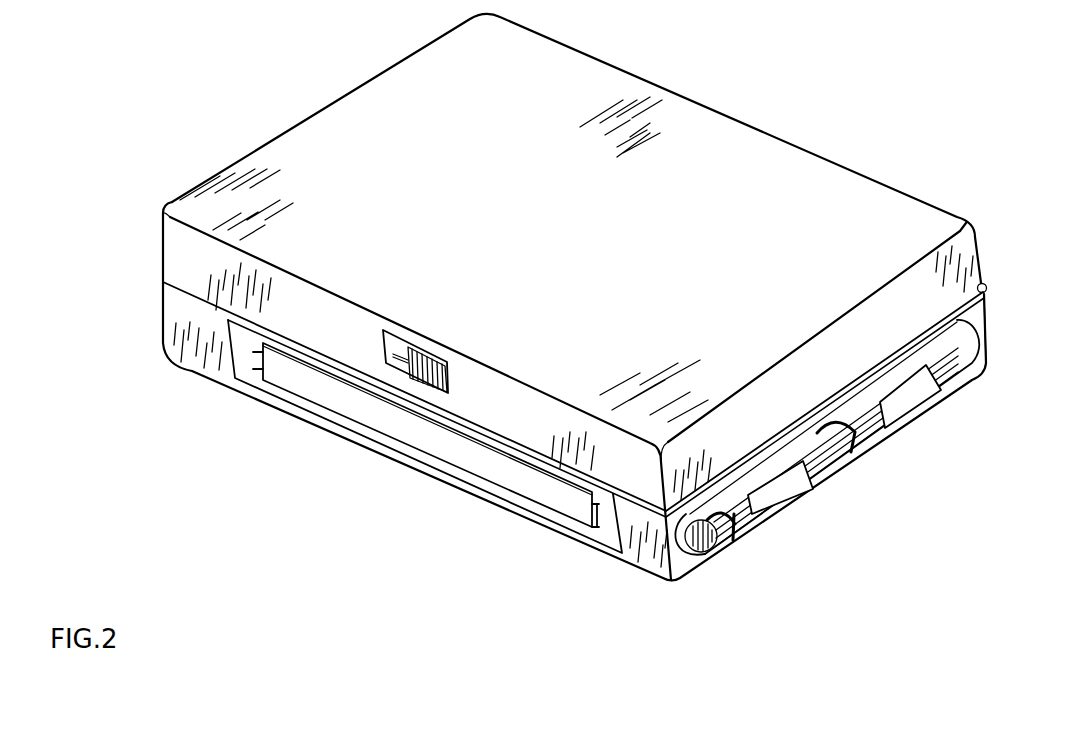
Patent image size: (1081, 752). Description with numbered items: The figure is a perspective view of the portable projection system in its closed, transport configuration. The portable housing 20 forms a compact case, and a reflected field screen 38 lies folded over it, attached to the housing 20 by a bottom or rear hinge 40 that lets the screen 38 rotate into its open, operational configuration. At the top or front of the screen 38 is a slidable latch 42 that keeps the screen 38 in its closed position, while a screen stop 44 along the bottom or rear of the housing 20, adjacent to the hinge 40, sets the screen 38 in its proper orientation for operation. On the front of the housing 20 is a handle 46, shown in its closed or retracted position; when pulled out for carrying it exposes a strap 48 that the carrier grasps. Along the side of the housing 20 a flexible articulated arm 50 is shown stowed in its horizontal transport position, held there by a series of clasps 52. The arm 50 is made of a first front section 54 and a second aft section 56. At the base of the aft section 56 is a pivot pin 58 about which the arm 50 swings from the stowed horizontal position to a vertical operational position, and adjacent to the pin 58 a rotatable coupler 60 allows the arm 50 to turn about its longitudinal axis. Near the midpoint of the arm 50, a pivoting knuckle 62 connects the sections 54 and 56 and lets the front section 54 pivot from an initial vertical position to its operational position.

The portable housing 20 is at (162, 307).
The reflected field screen 38 is at (729, 115).
The hinge 40 is at (990, 289).
The slidable latch 42 is at (427, 346).
The screen stop 44 is at (987, 284).
The handle 46 is at (610, 536).
The strap 48 is at (290, 373).
The flexible articulated arm 50 is at (983, 357).
The clasp 52 is at (917, 400).
The first front section 54 is at (860, 403).
The second aft section 56 is at (820, 447).
The pivot pin 58 is at (673, 584).
The rotatable coupler 60 is at (767, 522).
The pivoting knuckle 62 is at (850, 435).